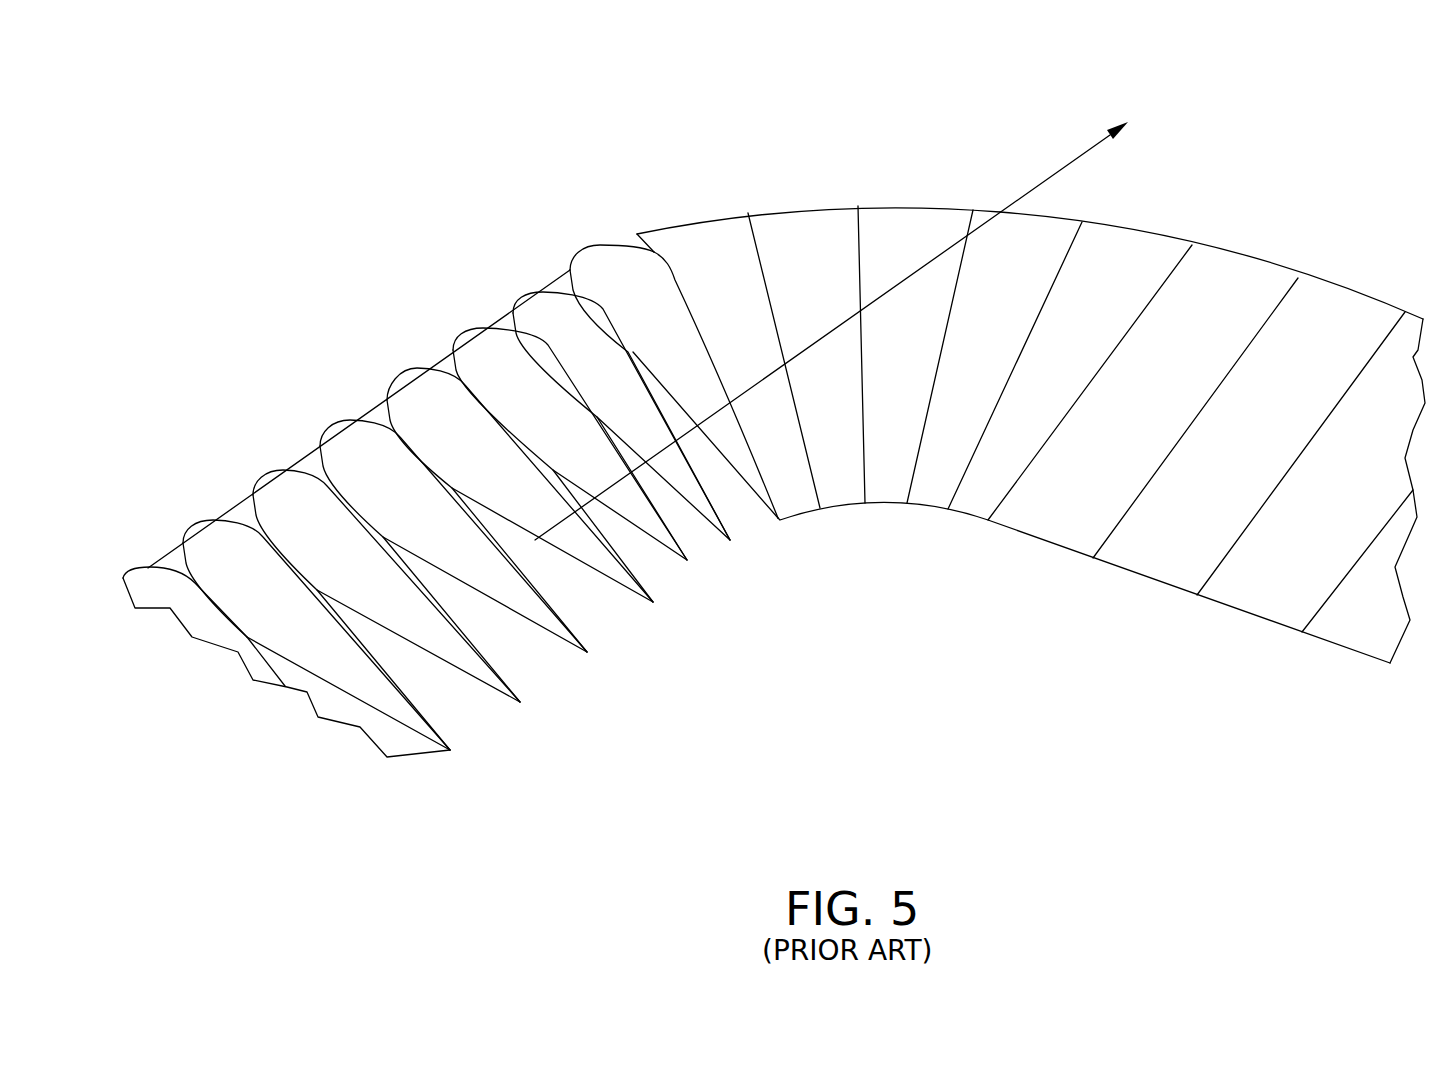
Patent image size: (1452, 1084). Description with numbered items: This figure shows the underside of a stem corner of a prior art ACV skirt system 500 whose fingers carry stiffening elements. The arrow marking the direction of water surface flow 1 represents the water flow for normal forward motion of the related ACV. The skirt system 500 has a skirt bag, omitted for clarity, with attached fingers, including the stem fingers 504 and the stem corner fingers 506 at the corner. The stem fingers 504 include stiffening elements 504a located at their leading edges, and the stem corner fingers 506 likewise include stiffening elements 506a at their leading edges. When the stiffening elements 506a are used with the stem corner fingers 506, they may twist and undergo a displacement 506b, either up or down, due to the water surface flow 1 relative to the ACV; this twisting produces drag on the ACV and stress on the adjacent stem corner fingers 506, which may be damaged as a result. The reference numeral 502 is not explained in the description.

The prior art ACV skirt system 500 is at (901, 698).
The airfoil vane 502 is at (340, 432).
The stem fingers 504 is at (1210, 282).
The stiffening element 504a is at (1273, 268).
The stem corner fingers 506 is at (880, 207).
The stiffening element 506a is at (697, 222).
The displacement 506b is at (637, 234).
The direction of water surface flow 1 is at (1063, 166).